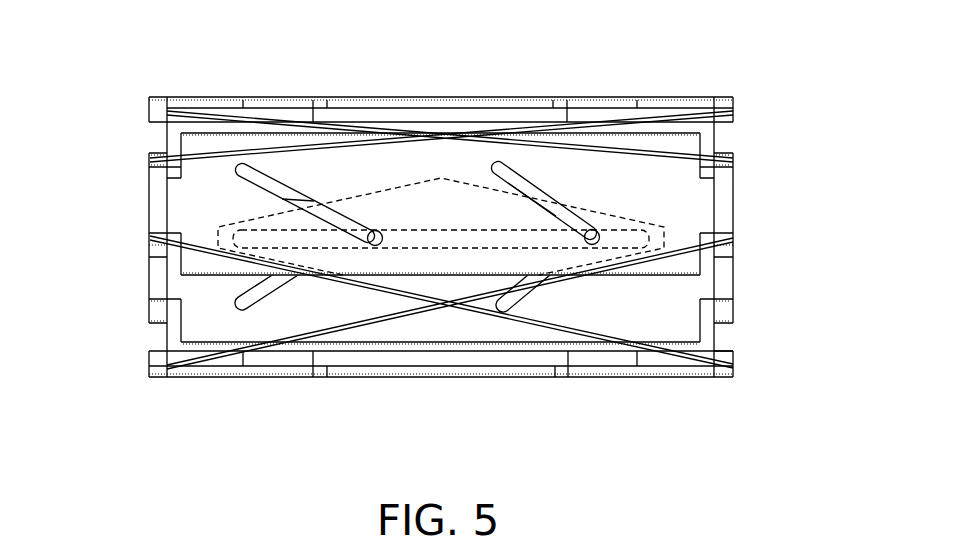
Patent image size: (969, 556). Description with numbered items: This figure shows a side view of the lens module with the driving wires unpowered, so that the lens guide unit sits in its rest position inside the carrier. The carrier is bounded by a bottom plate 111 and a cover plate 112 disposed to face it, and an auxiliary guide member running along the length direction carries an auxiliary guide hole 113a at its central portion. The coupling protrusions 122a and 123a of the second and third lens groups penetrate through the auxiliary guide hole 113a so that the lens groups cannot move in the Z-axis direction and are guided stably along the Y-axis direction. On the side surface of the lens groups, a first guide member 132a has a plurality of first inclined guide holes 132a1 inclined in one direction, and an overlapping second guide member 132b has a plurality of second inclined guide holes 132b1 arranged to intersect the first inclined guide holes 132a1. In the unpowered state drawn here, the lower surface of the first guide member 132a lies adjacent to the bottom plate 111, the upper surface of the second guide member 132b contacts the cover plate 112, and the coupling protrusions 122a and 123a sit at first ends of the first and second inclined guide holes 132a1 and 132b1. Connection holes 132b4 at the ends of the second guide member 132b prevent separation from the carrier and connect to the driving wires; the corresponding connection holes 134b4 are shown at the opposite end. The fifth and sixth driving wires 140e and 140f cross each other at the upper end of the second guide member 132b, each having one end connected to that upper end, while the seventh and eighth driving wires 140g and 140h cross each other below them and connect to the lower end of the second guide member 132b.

The bottom plate 111 is at (603, 368).
The cover plate 112 is at (614, 104).
The auxiliary guide hole 113a is at (430, 240).
The coupling protrusion 122a is at (589, 230).
The coupling protrusion 123a is at (369, 229).
The first guide member 132a is at (677, 325).
The second guide member 132b is at (690, 143).
The first inclined guide holes 132a1 is at (253, 304).
The second inclined guide holes 132b1 is at (248, 165).
The connection holes 132b4 is at (150, 238).
The second guide groove 134b4 is at (733, 233).
The fifth driving wire 140e is at (296, 107).
The sixth driving wire 140f is at (262, 134).
The seventh driving wire 140g is at (183, 257).
The eighth driving wire 140h is at (203, 352).